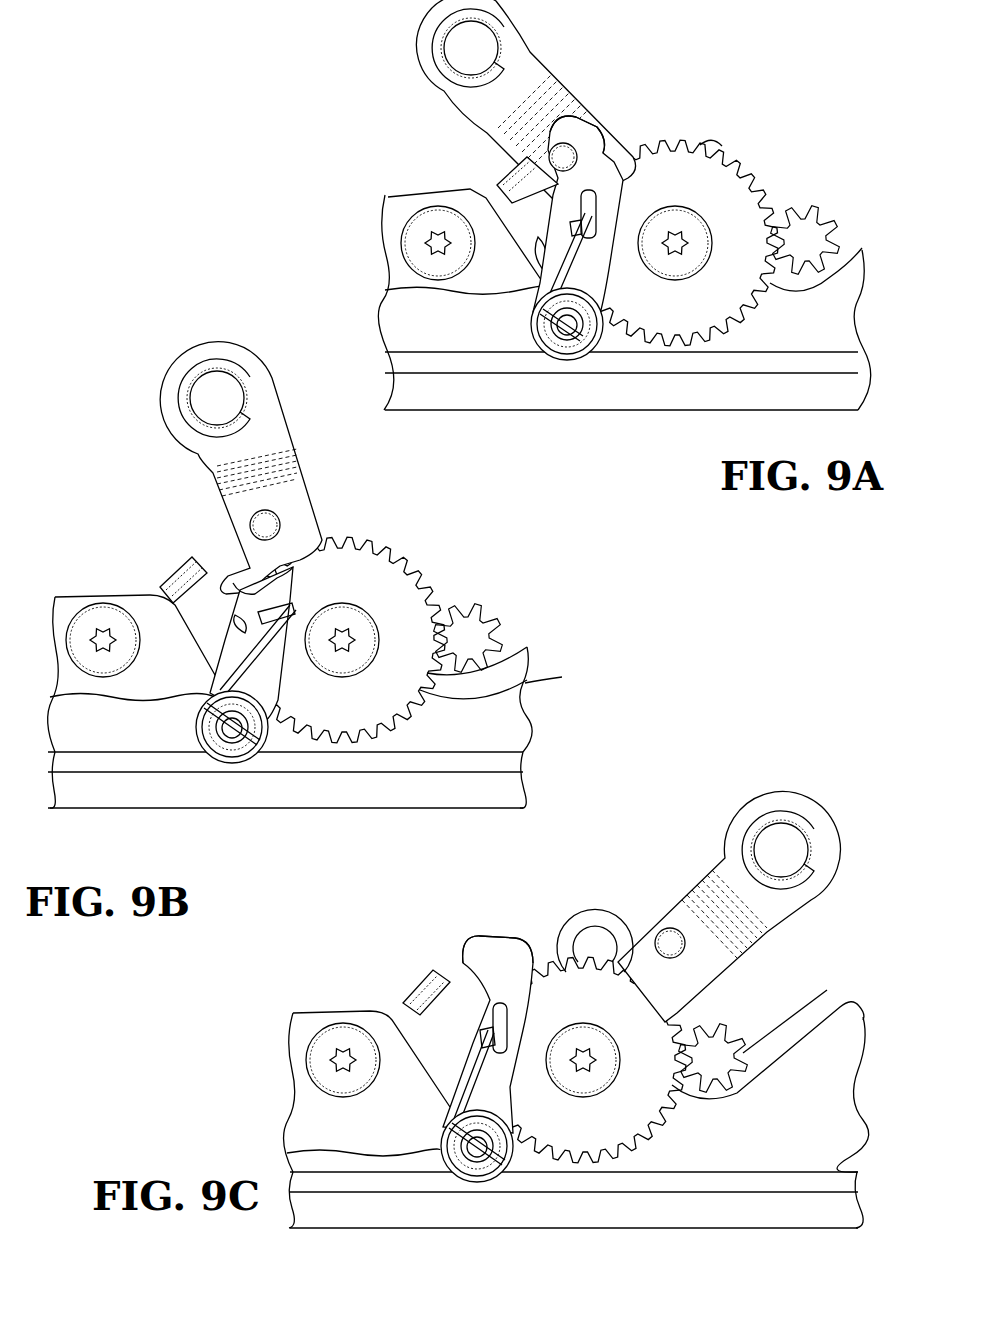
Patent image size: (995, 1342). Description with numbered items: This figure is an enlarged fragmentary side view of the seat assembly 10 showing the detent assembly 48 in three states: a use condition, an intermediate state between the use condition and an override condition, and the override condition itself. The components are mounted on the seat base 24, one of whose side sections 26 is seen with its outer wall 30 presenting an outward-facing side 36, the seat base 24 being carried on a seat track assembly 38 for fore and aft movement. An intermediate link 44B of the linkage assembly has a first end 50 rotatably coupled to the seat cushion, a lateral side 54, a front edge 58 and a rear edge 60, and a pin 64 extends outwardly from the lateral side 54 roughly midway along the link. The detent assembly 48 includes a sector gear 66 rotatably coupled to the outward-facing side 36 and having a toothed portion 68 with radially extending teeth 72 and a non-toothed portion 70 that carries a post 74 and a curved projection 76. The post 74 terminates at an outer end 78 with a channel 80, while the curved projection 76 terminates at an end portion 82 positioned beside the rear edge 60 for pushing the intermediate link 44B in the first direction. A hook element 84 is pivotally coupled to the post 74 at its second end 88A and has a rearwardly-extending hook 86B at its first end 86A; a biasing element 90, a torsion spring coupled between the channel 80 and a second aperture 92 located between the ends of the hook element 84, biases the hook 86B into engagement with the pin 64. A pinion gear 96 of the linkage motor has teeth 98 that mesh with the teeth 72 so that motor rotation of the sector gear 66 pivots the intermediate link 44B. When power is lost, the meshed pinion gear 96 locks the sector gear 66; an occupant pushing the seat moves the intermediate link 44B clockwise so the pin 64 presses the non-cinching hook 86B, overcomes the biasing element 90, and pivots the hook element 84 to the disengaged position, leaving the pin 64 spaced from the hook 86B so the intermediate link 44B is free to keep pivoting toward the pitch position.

In FIG. 9A, the seat assembly 10 is at (705, 74).
In FIG. 9B, the seat assembly 10 is at (112, 359).
In FIG. 9C, the seat assembly 10 is at (831, 775).
In FIG. 9A, the seat base 24 is at (880, 363).
In FIG. 9B, the seat base 24 is at (565, 718).
In FIG. 9C, the seat base 24 is at (879, 1184).
In FIG. 9A, the side section 26 is at (876, 320).
In FIG. 9B, the side section 26 is at (556, 745).
In FIG. 9C, the side section 26 is at (880, 1139).
In FIG. 9A, the outer wall 30 is at (467, 358).
In FIG. 9B, the outer wall 30 is at (106, 758).
In FIG. 9C, the outer wall 30 is at (345, 1180).
In FIG. 9A, the outward-facing side 36 is at (425, 333).
In FIG. 9B, the outward-facing side 36 is at (75, 739).
In FIG. 9C, the outward-facing side 36 is at (367, 1129).
In FIG. 9A, the seat track assembly 38 is at (434, 418).
In FIG. 9B, the seat track assembly 38 is at (46, 761).
In FIG. 9C, the seat track assembly 38 is at (316, 1237).
In FIG. 9A, the intermediate link 44B is at (578, 47).
In FIG. 9B, the intermediate link 44B is at (232, 322).
In FIG. 9C, the intermediate link 44B is at (692, 860).
In FIG. 9A, the detent assembly 48 is at (669, 383).
In FIG. 9B, the detent assembly 48 is at (456, 559).
In FIG. 9C, the detent assembly 48 is at (593, 1199).
In FIG. 9B, the first end 50 is at (200, 342).
In FIG. 9C, the first end 50 is at (777, 792).
In FIG. 9A, the lateral side 54 is at (513, 88).
In FIG. 9B, the lateral side 54 is at (244, 451).
In FIG. 9C, the lateral side 54 is at (681, 979).
In FIG. 9A, the front edge 58 is at (545, 60).
In FIG. 9B, the front edge 58 is at (279, 410).
In FIG. 9C, the front edge 58 is at (772, 928).
In FIG. 9A, the rear edge 60 is at (487, 133).
In FIG. 9B, the rear edge 60 is at (210, 473).
In FIG. 9C, the rear edge 60 is at (686, 895).
In FIG. 9A, the pin 64 is at (570, 150).
In FIG. 9B, the pin 64 is at (268, 522).
In FIG. 9C, the pin 64 is at (668, 940).
In FIG. 9A, the sector gear 66 is at (759, 130).
In FIG. 9B, the sector gear 66 is at (428, 730).
In FIG. 9C, the sector gear 66 is at (695, 1129).
In FIG. 9A, the toothed portion 68 is at (762, 158).
In FIG. 9B, the toothed portion 68 is at (446, 597).
In FIG. 9C, the toothed portion 68 is at (702, 1008).
In FIG. 9A, the non-toothed portion 70 is at (622, 348).
In FIG. 9B, the non-toothed portion 70 is at (303, 748).
In FIG. 9C, the non-toothed portion 70 is at (552, 1180).
In FIG. 9A, the teeth 72 is at (713, 143).
In FIG. 9B, the teeth 72 is at (506, 682).
In FIG. 9C, the teeth 72 is at (596, 942).
In FIG. 9A, the post 74 is at (572, 364).
In FIG. 9B, the post 74 is at (232, 762).
In FIG. 9C, the post 74 is at (478, 1186).
In FIG. 9A, the curved projection 76 is at (506, 174).
In FIG. 9B, the curved projection 76 is at (163, 558).
In FIG. 9C, the curved projection 76 is at (417, 974).
In FIG. 9A, the outer end 78 is at (565, 334).
In FIG. 9B, the outer end 78 is at (225, 737).
In FIG. 9C, the outer end 78 is at (472, 1160).
In FIG. 9A, the channel 80 is at (590, 338).
In FIG. 9B, the channel 80 is at (265, 742).
In FIG. 9C, the channel 80 is at (492, 1170).
In FIG. 9A, the end portion 82 is at (512, 186).
In FIG. 9B, the end portion 82 is at (186, 560).
In FIG. 9C, the end portion 82 is at (412, 992).
In FIG. 9A, the hook element 84 is at (620, 274).
In FIG. 9B, the hook element 84 is at (291, 692).
In FIG. 9C, the hook element 84 is at (532, 1102).
In FIG. 9A, the first end 86A is at (617, 136).
In FIG. 9B, the first end 86A is at (316, 528).
In FIG. 9C, the first end 86A is at (509, 930).
In FIG. 9A, the hook 86B is at (572, 148).
In FIG. 9B, the hook 86B is at (262, 585).
In FIG. 9C, the hook 86B is at (478, 934).
In FIG. 9A, the second end 88A is at (521, 347).
In FIG. 9B, the second end 88A is at (182, 703).
In FIG. 9C, the second end 88A is at (416, 1153).
In FIG. 9A, the biasing element 90 is at (547, 292).
In FIG. 9B, the biasing element 90 is at (225, 665).
In FIG. 9C, the biasing element 90 is at (440, 1160).
In FIG. 9A, the second aperture 92 is at (571, 228).
In FIG. 9B, the second aperture 92 is at (292, 614).
In FIG. 9C, the second aperture 92 is at (482, 1035).
In FIG. 9A, the pinion gear 96 is at (834, 214).
In FIG. 9B, the pinion gear 96 is at (503, 617).
In FIG. 9C, the pinion gear 96 is at (740, 1028).
In FIG. 9A, the teeth 98 is at (840, 232).
In FIG. 9B, the teeth 98 is at (497, 633).
In FIG. 9C, the teeth 98 is at (827, 990).